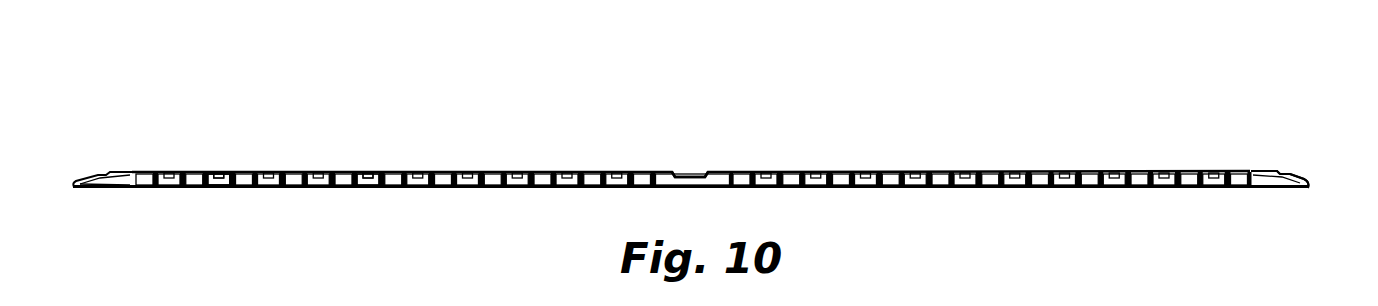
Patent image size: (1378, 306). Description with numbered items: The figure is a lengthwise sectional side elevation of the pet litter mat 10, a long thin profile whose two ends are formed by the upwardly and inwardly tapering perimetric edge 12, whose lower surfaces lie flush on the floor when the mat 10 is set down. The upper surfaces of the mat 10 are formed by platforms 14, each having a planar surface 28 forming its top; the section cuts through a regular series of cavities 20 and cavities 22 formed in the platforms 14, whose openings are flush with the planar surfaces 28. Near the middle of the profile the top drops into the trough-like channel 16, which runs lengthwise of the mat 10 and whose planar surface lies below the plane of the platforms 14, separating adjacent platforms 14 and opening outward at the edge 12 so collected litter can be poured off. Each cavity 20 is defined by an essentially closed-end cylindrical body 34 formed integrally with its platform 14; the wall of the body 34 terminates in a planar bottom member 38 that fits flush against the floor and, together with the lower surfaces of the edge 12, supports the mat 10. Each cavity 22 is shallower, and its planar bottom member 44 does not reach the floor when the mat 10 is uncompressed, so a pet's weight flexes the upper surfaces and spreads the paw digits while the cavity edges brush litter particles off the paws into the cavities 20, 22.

The litter mat 10 is at (1016, 88).
The perimetric edge 12 is at (1312, 174).
The platform 14 is at (116, 168).
The channel 16 is at (680, 170).
The cavity 20 is at (243, 168).
The cavity 22 is at (367, 168).
The planar surface 28 is at (1262, 170).
The cylindrical body 34 is at (134, 182).
The bottom member 38 is at (288, 184).
The bottom member 44 is at (218, 186).